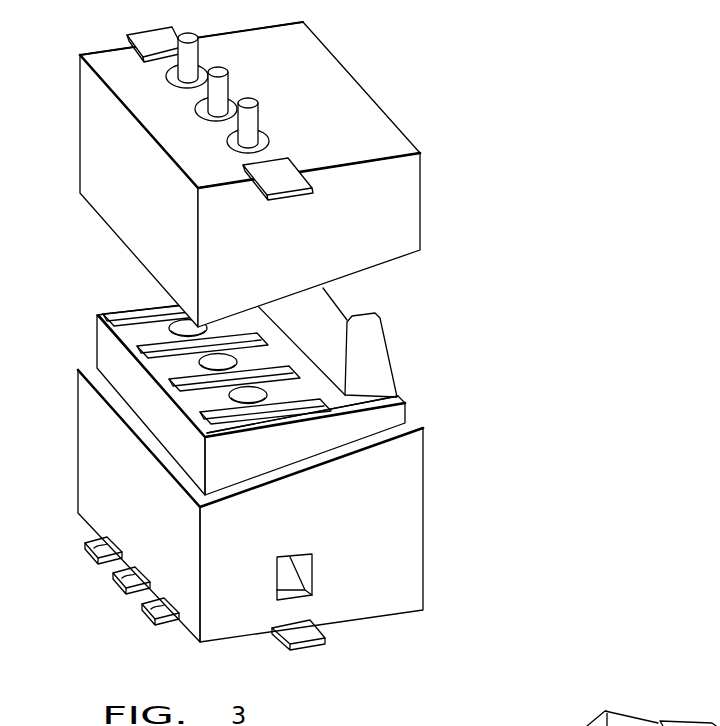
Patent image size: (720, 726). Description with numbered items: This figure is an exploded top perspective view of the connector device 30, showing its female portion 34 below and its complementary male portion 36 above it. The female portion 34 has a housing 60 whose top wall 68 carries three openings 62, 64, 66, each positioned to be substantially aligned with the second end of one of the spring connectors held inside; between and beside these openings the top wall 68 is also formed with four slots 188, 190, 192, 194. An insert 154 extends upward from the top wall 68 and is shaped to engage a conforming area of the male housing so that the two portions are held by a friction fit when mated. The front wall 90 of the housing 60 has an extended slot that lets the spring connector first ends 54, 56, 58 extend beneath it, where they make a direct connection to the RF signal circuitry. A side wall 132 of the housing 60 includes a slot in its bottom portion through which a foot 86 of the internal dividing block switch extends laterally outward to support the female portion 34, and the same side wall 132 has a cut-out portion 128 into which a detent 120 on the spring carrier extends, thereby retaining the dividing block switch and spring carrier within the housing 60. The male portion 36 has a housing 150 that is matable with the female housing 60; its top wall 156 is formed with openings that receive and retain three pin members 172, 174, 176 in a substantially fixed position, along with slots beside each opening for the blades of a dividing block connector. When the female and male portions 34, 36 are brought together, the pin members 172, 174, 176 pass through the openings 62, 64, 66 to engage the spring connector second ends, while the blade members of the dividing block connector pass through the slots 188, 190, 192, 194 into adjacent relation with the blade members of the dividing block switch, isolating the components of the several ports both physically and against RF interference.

The device 30 is at (478, 283).
The female portion 34 is at (479, 430).
The male portion 36 is at (366, 55).
The first end 54 is at (90, 552).
The first end 56 is at (118, 583).
The first end 58 is at (148, 614).
The housing 60 is at (430, 498).
The opening 62 is at (178, 330).
The opening 64 is at (212, 363).
The opening 66 is at (245, 397).
The top wall 68 is at (398, 398).
The foot 86 is at (313, 630).
The front wall 90 is at (95, 508).
The detent 120 is at (284, 572).
The cut-out portion 128 is at (305, 572).
The side wall 132 is at (413, 589).
The housing 150 is at (382, 101).
The insert 154 is at (374, 345).
The top wall 156 is at (402, 143).
The pin member 172 is at (196, 50).
The pin member 174 is at (223, 87).
The pin member 176 is at (253, 118).
The slot 188 is at (143, 317).
The slot 190 is at (157, 357).
The slot 192 is at (183, 392).
The slot 194 is at (223, 423).